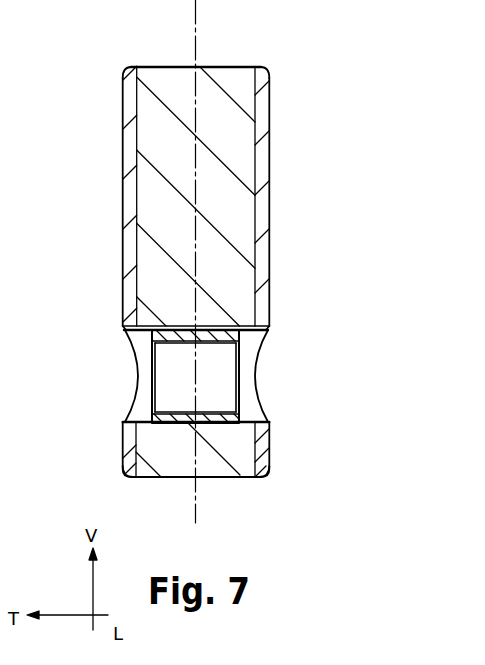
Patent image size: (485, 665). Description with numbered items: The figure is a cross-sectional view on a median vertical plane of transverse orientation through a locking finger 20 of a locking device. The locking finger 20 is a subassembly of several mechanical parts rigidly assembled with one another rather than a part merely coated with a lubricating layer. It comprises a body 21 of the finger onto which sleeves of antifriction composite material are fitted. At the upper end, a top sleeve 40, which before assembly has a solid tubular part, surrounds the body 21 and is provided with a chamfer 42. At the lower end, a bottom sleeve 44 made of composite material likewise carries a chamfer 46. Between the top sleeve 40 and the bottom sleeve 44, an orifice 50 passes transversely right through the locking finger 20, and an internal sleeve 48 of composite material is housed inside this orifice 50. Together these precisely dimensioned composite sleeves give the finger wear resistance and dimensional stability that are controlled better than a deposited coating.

The locking finger 20 is at (200, 247).
The body of the finger 21 is at (240, 163).
The top sleeve 40 is at (260, 207).
The chamfer 42 is at (270, 70).
The bottom sleeve 44 is at (260, 447).
The chamfer 46 is at (122, 472).
The internal sleeve 48 is at (188, 340).
The orifice 50 is at (253, 382).